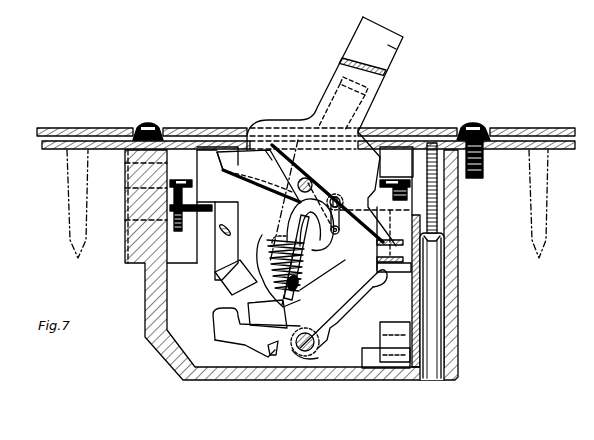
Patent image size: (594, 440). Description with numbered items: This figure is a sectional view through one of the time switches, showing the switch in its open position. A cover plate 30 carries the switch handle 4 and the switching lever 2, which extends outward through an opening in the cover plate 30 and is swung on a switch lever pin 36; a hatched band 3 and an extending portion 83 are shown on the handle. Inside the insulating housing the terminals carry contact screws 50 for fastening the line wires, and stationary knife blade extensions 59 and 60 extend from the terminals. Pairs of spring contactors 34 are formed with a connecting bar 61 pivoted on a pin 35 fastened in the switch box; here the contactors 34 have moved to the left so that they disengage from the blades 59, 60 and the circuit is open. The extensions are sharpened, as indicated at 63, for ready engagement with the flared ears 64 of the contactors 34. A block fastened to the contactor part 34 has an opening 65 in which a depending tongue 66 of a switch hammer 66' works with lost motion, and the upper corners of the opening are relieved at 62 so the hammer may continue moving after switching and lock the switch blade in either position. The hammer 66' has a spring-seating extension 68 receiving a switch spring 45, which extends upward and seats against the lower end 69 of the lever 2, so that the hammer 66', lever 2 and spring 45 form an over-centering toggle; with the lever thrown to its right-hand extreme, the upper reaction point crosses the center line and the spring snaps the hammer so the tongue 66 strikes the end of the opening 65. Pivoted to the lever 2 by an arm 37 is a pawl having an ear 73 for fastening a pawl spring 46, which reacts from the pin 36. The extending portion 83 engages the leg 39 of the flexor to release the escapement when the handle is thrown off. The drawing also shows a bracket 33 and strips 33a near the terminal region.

The switching lever 2 is at (340, 66).
The handle bar 3 is at (391, 73).
The switch handle 4 is at (396, 48).
The cover plate 30 is at (191, 128).
The extending portion 83 is at (243, 156).
The contact screws 50 is at (193, 180).
The switch lever pin 36 is at (296, 181).
The pawl spring 46 is at (352, 186).
The arm 37 is at (341, 207).
The ear 73 is at (339, 232).
The contact strips 33a is at (380, 259).
The switch hammer 66' is at (291, 225).
The lower end of switch lever 69 is at (283, 242).
The switch spring 45 is at (268, 250).
The bracket 33 is at (228, 212).
The leg of flexor 39 is at (218, 232).
The stationary knife blade extension 59 is at (221, 257).
The sharpened portion 63 is at (229, 284).
The relieved upper corners 62 is at (301, 288).
The spring-seating extension 68 is at (300, 257).
The depending tongue 66 is at (299, 276).
The opening 65 is at (283, 322).
The spring contactors 34 is at (241, 338).
The connecting bar 61 is at (270, 350).
The pin 35 is at (321, 344).
The flared ears 64 is at (387, 280).
The stationary knife blade extension 60 is at (392, 340).